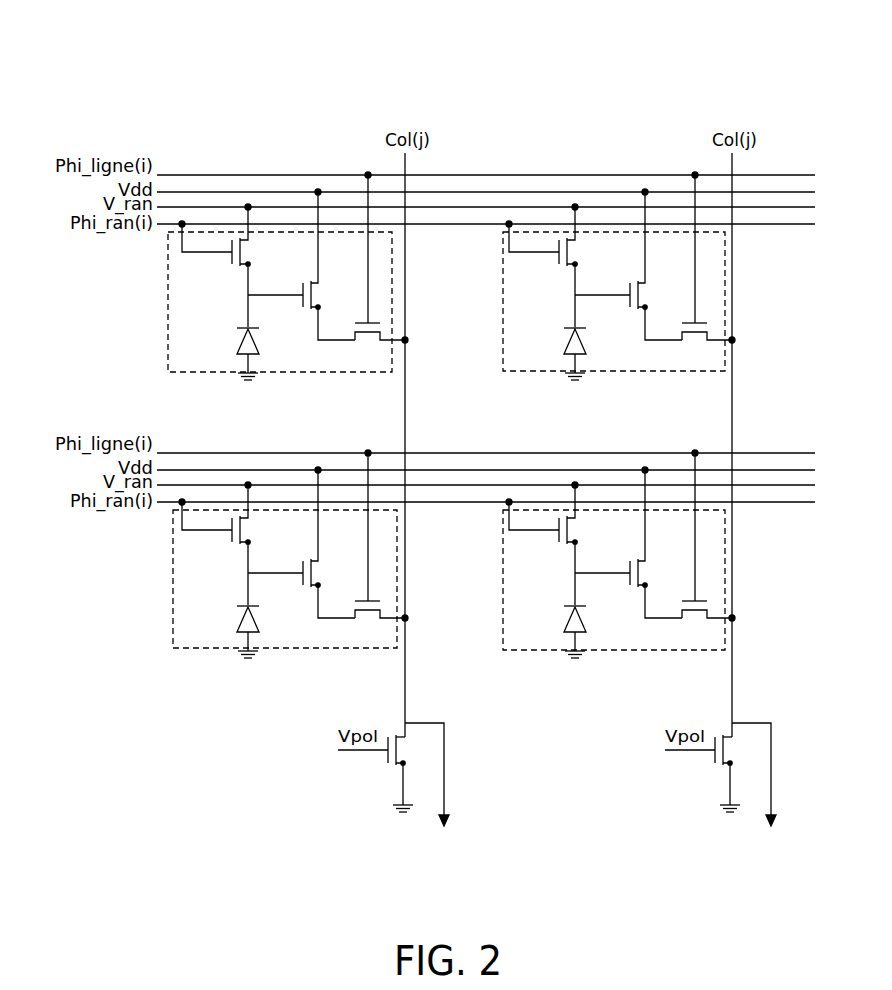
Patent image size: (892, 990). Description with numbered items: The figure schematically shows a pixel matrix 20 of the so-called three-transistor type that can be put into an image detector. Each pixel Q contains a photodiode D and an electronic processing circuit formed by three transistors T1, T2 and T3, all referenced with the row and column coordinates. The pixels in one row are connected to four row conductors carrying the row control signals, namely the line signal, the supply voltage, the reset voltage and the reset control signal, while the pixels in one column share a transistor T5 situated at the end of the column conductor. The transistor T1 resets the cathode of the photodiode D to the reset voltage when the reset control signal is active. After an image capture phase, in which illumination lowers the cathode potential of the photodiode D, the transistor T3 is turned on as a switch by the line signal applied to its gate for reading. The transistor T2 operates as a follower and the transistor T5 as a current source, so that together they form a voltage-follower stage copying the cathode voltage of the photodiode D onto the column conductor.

The pixel matrix detection circuit 20 is at (435, 418).
The transistor T1 is at (403, 404).
The transistor T2 is at (466, 403).
The transistor T3 is at (537, 409).
The transistor T5 is at (557, 774).
The photodiode D is at (389, 493).
The pixel Q is at (168, 300).